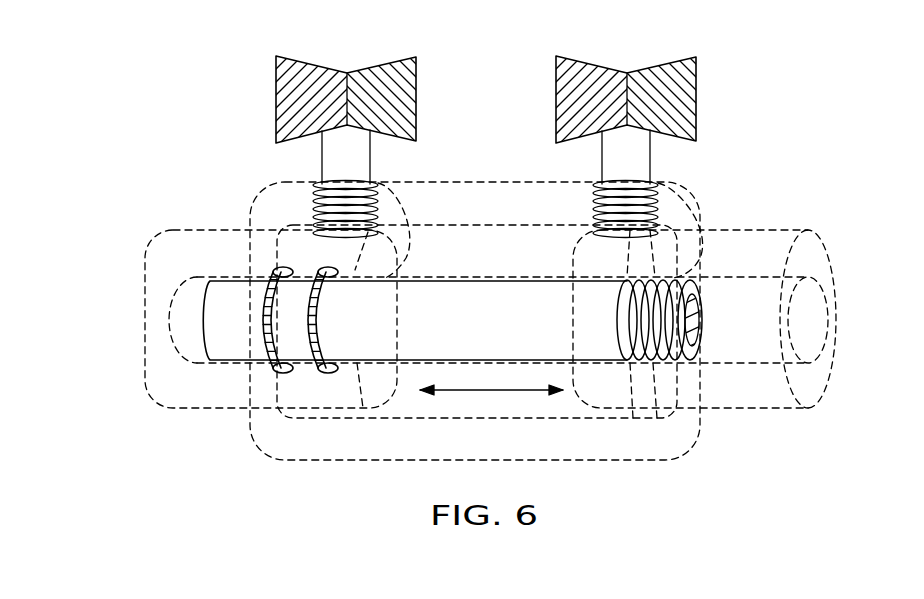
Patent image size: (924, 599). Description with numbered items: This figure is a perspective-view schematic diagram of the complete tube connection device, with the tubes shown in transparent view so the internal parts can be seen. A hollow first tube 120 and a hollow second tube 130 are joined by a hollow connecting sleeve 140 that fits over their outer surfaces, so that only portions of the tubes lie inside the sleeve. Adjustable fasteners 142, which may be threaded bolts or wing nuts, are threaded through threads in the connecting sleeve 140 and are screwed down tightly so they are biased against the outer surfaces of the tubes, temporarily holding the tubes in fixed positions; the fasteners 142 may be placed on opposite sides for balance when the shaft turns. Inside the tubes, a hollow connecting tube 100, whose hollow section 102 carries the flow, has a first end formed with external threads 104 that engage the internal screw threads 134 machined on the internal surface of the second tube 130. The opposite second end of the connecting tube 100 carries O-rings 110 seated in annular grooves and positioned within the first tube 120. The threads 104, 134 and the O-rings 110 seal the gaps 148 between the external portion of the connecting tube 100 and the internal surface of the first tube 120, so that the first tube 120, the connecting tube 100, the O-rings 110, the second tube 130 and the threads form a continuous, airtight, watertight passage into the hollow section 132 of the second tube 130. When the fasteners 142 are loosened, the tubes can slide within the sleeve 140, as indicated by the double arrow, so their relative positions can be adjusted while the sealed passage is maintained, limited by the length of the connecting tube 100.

The connecting tube 100 is at (240, 362).
The hollow section of the connecting tube 102 is at (706, 316).
The threads 104 is at (667, 362).
The O-ring 110 is at (328, 271).
The first tube 120 is at (145, 315).
The second tube 130 is at (738, 228).
The hollow section of the second tube 132 is at (810, 318).
The internal screw threads 134 is at (678, 300).
The connecting sleeve 140 is at (464, 182).
The adjustable fasteners 142 is at (276, 100).
The gaps 148 is at (392, 374).